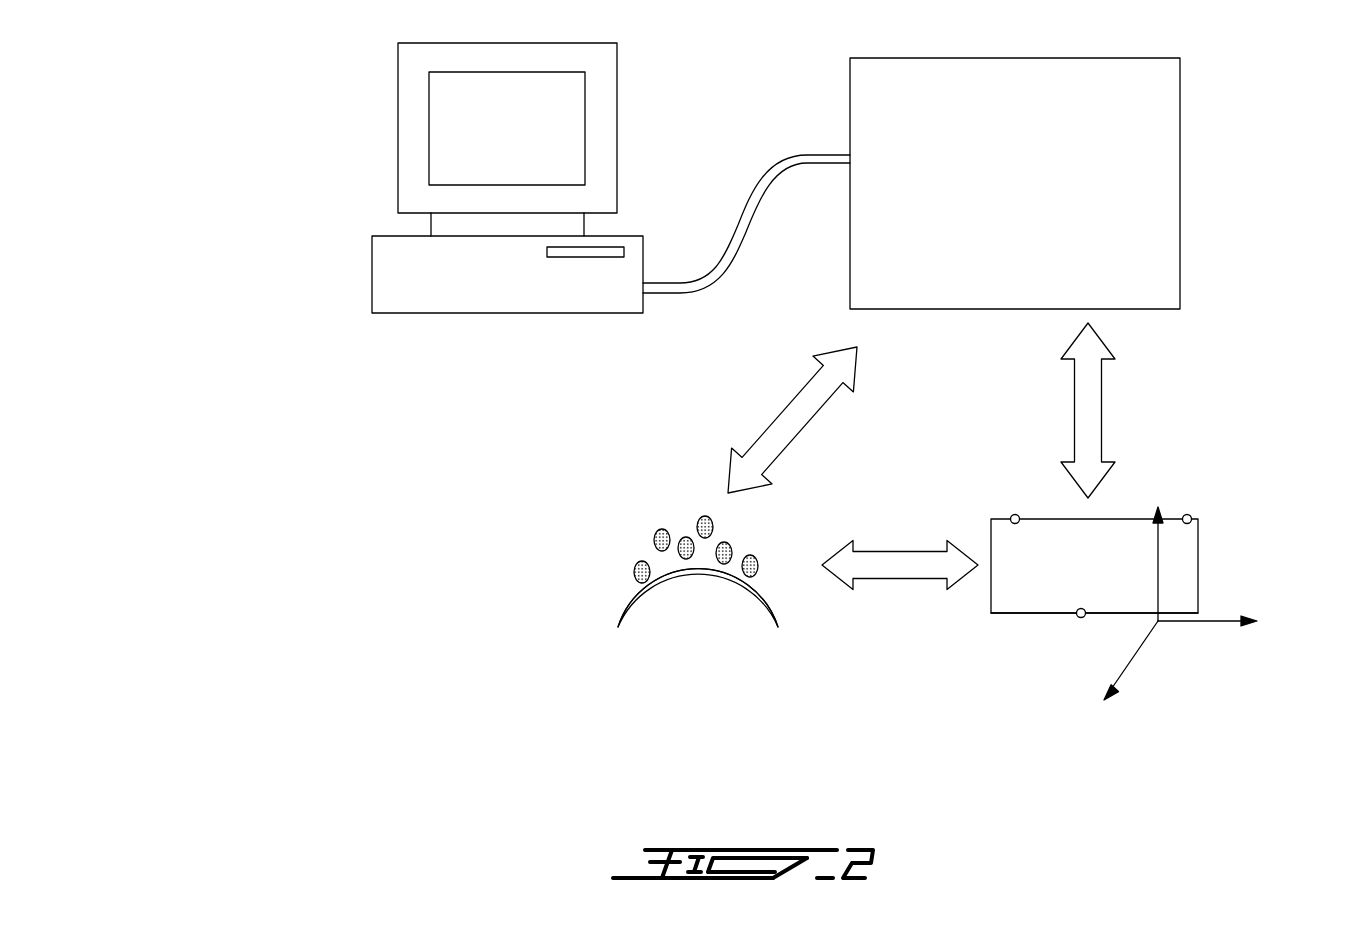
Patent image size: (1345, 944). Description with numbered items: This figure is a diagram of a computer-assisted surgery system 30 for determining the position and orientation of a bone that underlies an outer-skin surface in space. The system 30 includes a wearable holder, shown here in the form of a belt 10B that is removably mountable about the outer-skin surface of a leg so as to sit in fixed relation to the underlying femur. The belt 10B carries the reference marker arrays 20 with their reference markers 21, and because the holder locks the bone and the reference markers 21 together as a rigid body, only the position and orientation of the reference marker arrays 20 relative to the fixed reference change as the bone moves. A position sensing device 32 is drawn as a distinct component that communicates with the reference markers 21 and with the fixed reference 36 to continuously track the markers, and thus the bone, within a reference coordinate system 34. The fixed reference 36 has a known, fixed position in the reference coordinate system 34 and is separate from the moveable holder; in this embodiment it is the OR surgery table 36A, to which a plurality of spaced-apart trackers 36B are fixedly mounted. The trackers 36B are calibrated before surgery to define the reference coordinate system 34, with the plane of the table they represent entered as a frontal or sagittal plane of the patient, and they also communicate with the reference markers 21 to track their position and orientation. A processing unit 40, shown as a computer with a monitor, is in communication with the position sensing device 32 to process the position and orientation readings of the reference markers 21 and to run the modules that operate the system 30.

The processing unit 40 is at (340, 206).
The position sensing device 32 is at (850, 90).
The system 30 is at (410, 411).
The belt 10B is at (664, 590).
The reference marker arrays 20 is at (605, 577).
The reference markers 21 is at (657, 535).
The fixed reference 36 is at (1198, 563).
The surgery table 36A is at (1008, 613).
The trackers 36B is at (1015, 514).
The reference coordinate system 34 is at (1160, 670).